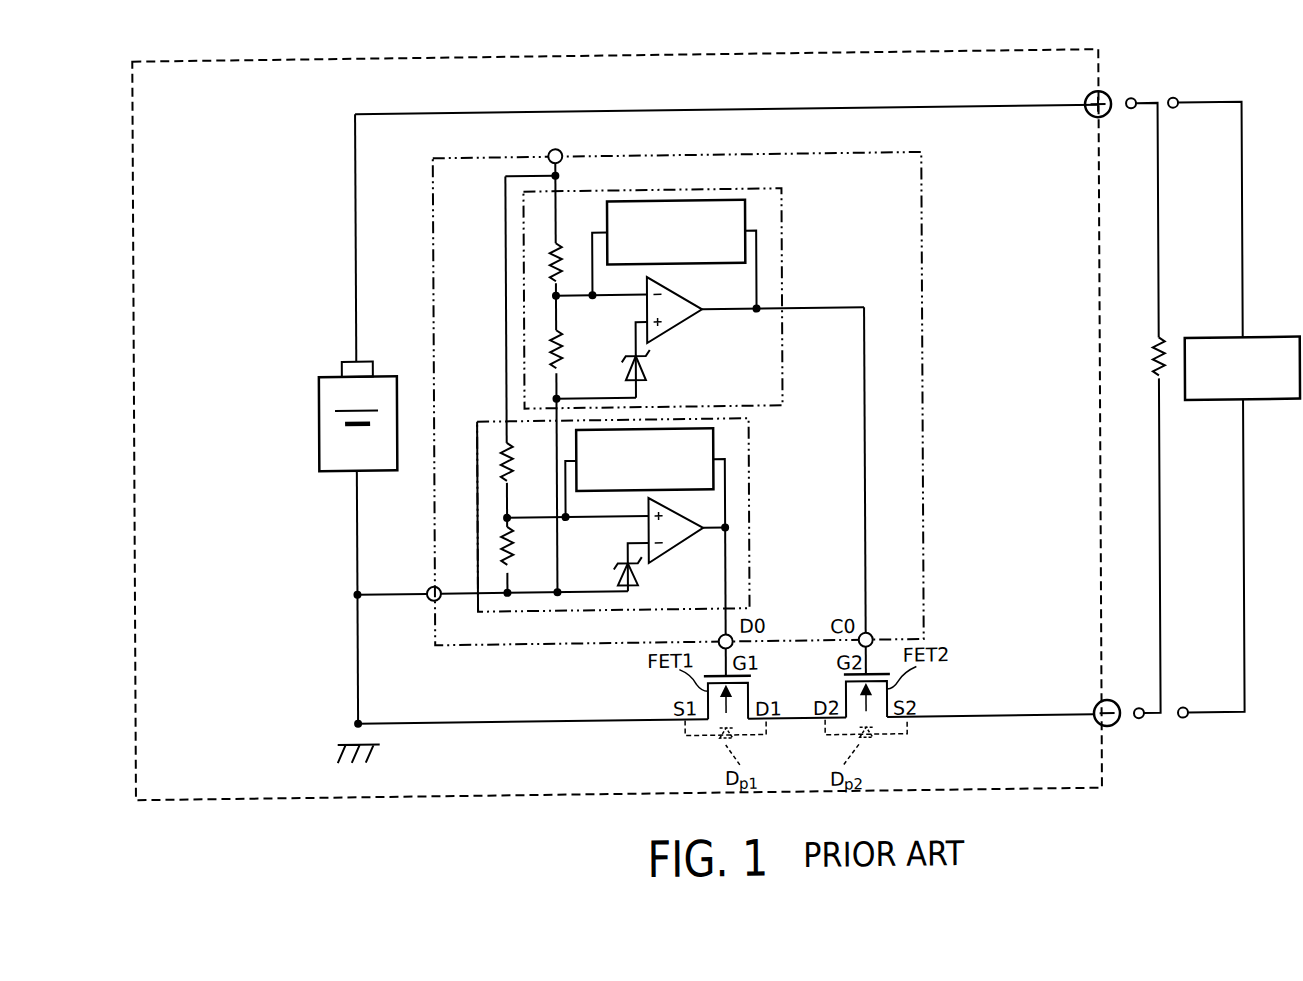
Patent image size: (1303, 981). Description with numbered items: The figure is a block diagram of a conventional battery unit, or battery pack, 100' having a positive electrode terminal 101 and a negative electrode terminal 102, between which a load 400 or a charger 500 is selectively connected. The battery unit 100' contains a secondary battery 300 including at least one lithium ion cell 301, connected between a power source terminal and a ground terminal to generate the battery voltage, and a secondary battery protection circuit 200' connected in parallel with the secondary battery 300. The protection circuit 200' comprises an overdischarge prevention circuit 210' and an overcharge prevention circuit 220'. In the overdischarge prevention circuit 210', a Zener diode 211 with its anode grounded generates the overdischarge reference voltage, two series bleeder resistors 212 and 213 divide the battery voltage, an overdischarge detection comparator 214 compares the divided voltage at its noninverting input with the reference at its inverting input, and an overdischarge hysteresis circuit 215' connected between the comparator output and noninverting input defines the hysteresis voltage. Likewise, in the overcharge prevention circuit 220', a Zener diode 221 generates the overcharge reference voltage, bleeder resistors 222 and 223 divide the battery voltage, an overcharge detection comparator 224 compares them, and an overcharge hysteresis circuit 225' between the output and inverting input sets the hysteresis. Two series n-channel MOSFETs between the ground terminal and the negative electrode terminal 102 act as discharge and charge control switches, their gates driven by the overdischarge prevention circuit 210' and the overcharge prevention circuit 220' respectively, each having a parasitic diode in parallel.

The battery unit 100' is at (617, 400).
The positive electrode terminal 101 is at (1106, 97).
The negative electrode terminal 102 is at (1114, 729).
The secondary battery protection circuit 200' is at (762, 383).
The overdischarge prevention circuit 210' is at (569, 572).
The Zener diode 211 is at (639, 574).
The bleeder resistor 212 is at (500, 468).
The bleeder resistor 213 is at (501, 555).
The overdischarge detection comparator 214 is at (646, 530).
The overdischarge hysteresis circuit 215' is at (695, 480).
The overcharge prevention circuit 220' is at (781, 233).
The Zener diode 221 is at (650, 370).
The bleeder resistor 222 is at (551, 249).
The bleeder resistor 223 is at (551, 341).
The overcharge detection comparator 224 is at (684, 328).
The overcharge hysteresis circuit 225' is at (674, 216).
The secondary battery 300 is at (319, 392).
The lithium ion cell 301 is at (347, 426).
The load 400 is at (1159, 378).
The charger 500 is at (1284, 345).